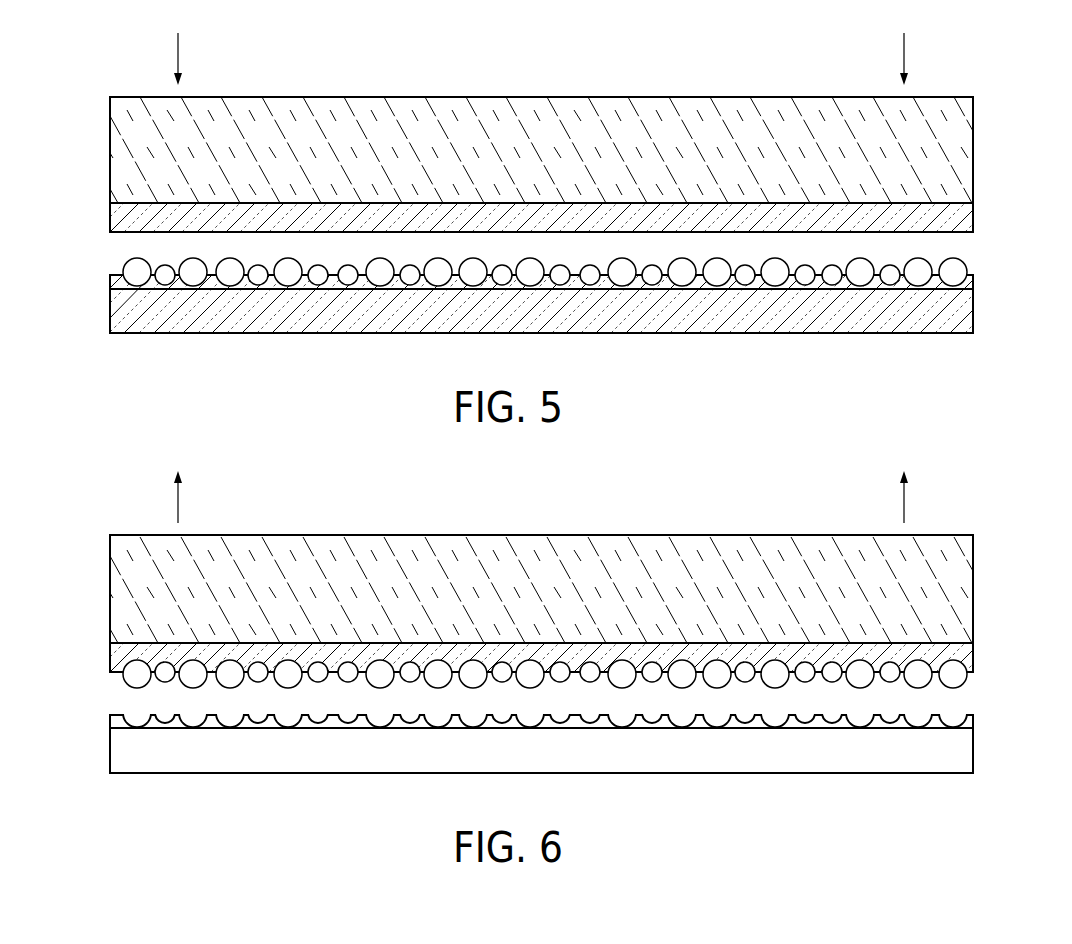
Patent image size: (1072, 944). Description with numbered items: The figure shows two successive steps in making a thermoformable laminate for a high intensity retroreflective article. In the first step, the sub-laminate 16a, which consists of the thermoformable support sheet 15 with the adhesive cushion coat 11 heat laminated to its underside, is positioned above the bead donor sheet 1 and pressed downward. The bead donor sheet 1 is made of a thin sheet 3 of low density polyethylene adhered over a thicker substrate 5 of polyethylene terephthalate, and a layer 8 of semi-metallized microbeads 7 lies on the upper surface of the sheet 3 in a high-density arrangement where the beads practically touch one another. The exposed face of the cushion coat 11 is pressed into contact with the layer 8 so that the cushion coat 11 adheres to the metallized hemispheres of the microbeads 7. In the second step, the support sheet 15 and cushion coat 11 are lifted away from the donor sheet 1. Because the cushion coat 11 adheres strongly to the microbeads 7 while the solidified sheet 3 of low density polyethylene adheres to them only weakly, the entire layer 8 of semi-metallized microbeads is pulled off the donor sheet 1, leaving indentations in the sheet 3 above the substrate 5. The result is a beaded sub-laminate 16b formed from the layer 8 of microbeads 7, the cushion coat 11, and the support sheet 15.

In FIG. 5, the bead donor sheet 1 is at (497, 302).
In FIG. 6, the bead donor sheet 1 is at (497, 742).
In FIG. 5, the sheet of low density polyethylene 3 is at (110, 282).
In FIG. 6, the sheet of low density polyethylene 3 is at (110, 722).
In FIG. 5, the substrate 5 is at (62, 272).
In FIG. 6, the substrate 5 is at (62, 712).
In FIG. 6, the semi-metallized microbeads 7 is at (240, 687).
In FIG. 5, the layer of semi-metallized microbeads 8 is at (115, 265).
In FIG. 6, the layer of semi-metallized microbeads 8 is at (500, 687).
In FIG. 5, the adhesive cushion coat 11 is at (110, 213).
In FIG. 6, the adhesive cushion coat 11 is at (110, 653).
In FIG. 5, the thermoformable support sheet 15 is at (110, 152).
In FIG. 6, the thermoformable support sheet 15 is at (110, 592).
In FIG. 5, the sub-laminate 16a is at (557, 163).
In FIG. 6, the beaded sub-laminate 16b is at (557, 602).